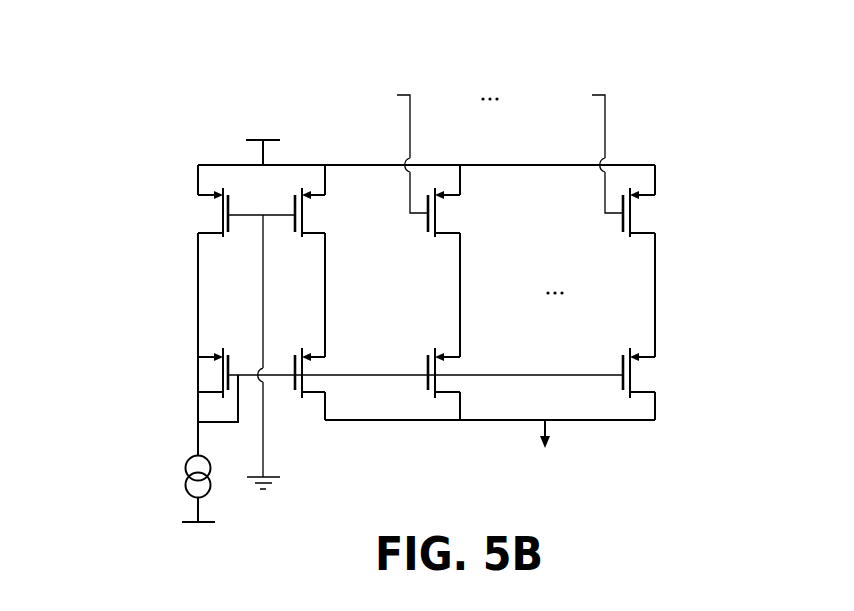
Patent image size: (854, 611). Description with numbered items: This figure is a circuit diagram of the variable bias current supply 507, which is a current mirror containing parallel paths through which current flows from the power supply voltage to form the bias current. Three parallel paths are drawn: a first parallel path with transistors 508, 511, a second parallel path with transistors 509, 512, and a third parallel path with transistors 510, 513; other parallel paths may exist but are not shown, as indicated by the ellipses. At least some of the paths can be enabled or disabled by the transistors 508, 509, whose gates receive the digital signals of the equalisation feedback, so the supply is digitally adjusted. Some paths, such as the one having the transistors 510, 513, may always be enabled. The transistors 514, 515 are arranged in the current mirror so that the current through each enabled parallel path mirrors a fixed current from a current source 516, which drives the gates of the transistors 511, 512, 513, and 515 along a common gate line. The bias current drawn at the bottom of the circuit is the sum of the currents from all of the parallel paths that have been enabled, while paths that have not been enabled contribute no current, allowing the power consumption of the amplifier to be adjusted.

The variable bias current supply 507 is at (146, 65).
The transistor 508 is at (657, 217).
The transistor 509 is at (462, 217).
The transistor 510 is at (325, 213).
The transistor 511 is at (657, 377).
The transistor 512 is at (457, 365).
The transistor 513 is at (325, 365).
The transistor 514 is at (197, 212).
The transistor 515 is at (197, 372).
The current source 516 is at (183, 485).